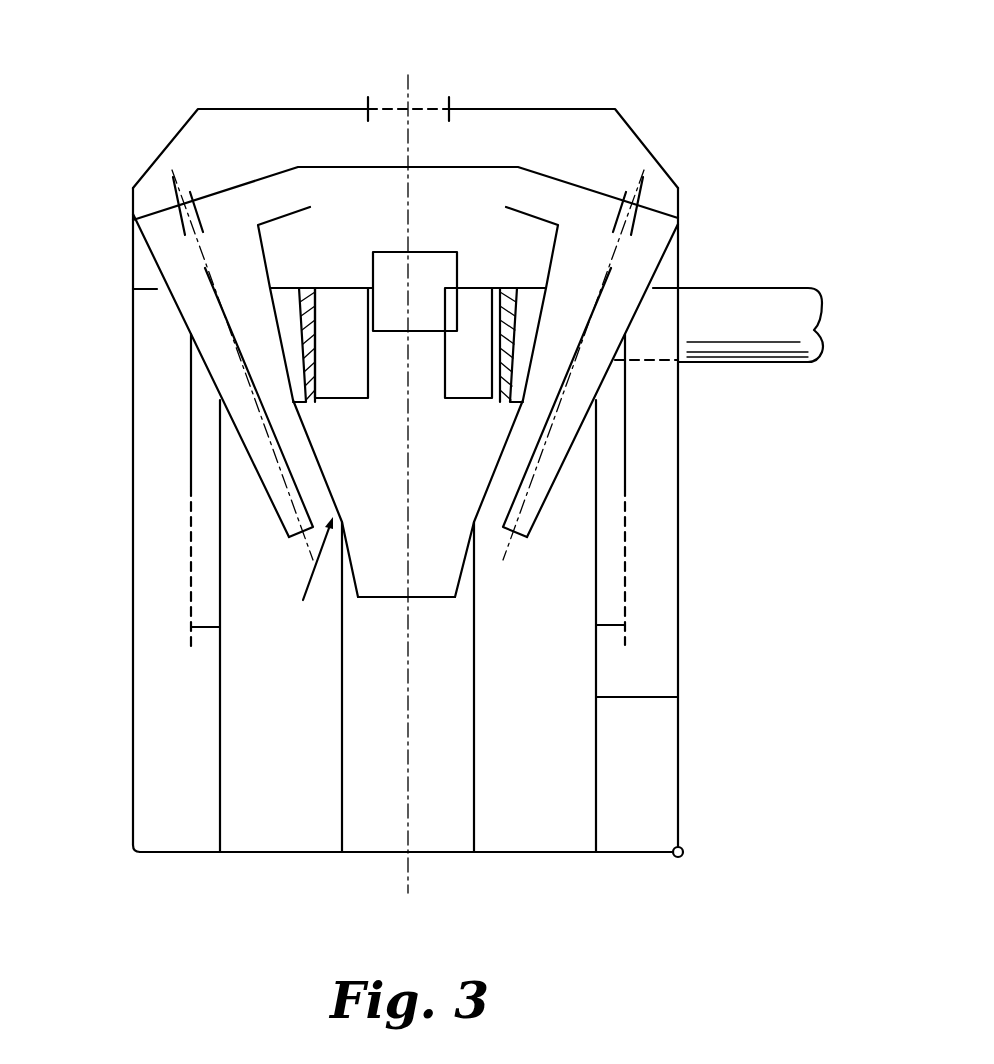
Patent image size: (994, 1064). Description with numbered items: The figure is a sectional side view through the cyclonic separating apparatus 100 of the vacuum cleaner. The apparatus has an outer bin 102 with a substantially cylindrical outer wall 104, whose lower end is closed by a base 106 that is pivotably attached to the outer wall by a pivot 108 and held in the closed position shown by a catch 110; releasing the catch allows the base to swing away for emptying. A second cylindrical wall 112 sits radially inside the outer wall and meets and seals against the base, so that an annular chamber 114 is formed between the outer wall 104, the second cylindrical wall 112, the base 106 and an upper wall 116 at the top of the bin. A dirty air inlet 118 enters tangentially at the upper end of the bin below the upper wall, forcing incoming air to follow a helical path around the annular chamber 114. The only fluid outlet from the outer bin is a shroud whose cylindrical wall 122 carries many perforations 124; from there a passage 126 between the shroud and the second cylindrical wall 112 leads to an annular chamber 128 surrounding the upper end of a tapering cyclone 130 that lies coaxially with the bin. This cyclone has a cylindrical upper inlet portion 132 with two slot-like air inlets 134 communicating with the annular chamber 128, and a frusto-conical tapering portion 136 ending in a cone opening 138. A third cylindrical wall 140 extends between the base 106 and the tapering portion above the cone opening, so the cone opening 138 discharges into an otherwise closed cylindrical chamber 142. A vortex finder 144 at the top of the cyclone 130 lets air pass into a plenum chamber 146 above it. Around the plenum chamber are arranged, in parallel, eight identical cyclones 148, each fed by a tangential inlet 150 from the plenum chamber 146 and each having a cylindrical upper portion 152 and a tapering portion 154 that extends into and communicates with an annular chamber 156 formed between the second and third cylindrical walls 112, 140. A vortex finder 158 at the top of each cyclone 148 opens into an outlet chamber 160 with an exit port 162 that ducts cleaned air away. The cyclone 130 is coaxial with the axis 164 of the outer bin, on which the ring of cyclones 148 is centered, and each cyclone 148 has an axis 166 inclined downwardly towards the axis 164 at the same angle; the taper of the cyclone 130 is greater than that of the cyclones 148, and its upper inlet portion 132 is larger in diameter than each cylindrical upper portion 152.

The cyclonic separating apparatus 100 is at (156, 97).
The outer bin 102 is at (678, 605).
The outer wall 104 is at (133, 725).
The base 106 is at (528, 853).
The pivot 108 is at (683, 856).
The catch 110 is at (131, 823).
The second cylindrical wall 112 is at (678, 697).
The annular chamber 114 is at (652, 787).
The upper wall 116 is at (148, 291).
The dirty air inlet 118 is at (770, 335).
The cylindrical wall 122 is at (625, 472).
The perforations 124 is at (190, 578).
The passage 126 is at (207, 447).
The annular chamber 128 is at (287, 303).
The tapering cyclone 130 is at (305, 575).
The upper inlet portion 132 is at (500, 317).
The air inlets 134 is at (345, 400).
The tapering portion 136 is at (473, 514).
The cone opening 138 is at (387, 600).
The third cylindrical wall 140 is at (473, 718).
The cylindrical chamber 142 is at (394, 821).
The vortex finder 144 is at (442, 258).
The plenum chamber 146 is at (392, 210).
The cyclones 148 is at (183, 335).
The tangential inlet 150 is at (277, 185).
The cylindrical upper portion 152 is at (147, 237).
The tapering portion 154 is at (262, 480).
The annular chamber 156 is at (547, 827).
The vortex finder 158 is at (193, 197).
The outlet chamber 160 is at (587, 120).
The exit port 162 is at (418, 109).
The axis 164 is at (406, 878).
The axis 166 is at (228, 325).